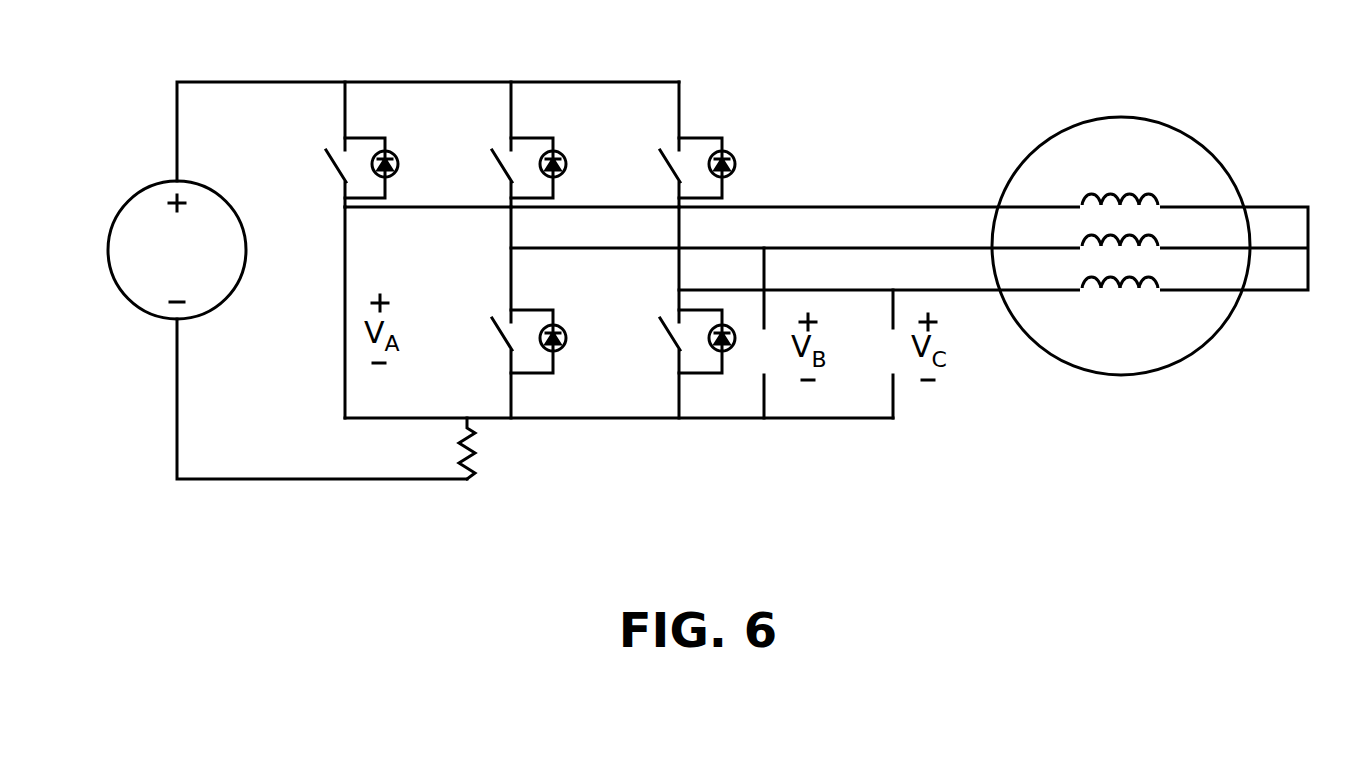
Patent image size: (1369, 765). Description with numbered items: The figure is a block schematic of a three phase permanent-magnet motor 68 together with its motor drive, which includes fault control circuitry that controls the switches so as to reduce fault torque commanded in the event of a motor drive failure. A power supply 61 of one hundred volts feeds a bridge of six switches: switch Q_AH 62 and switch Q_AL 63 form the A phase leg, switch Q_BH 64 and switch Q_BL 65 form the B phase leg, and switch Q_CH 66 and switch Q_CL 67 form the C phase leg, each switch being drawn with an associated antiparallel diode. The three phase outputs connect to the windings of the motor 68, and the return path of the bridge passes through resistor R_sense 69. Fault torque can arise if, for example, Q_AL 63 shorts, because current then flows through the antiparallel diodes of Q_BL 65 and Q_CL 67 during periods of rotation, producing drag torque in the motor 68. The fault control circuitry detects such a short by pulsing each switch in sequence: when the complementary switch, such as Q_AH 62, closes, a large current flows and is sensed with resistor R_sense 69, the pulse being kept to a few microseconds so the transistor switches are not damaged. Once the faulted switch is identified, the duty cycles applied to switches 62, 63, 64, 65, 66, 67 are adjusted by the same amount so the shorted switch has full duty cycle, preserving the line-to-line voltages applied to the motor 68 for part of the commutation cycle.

The power supply 61 is at (128, 220).
The switch Q_AH 62 is at (326, 153).
The switch Q_AL 63 is at (312, 356).
The switch Q_BH 64 is at (492, 153).
The switch Q_BL 65 is at (492, 320).
The switch Q_CH 66 is at (660, 153).
The switch Q_CL 67 is at (660, 320).
The three phase permanent-magnet motor 68 is at (1203, 160).
The resistor R_sense 69 is at (470, 460).